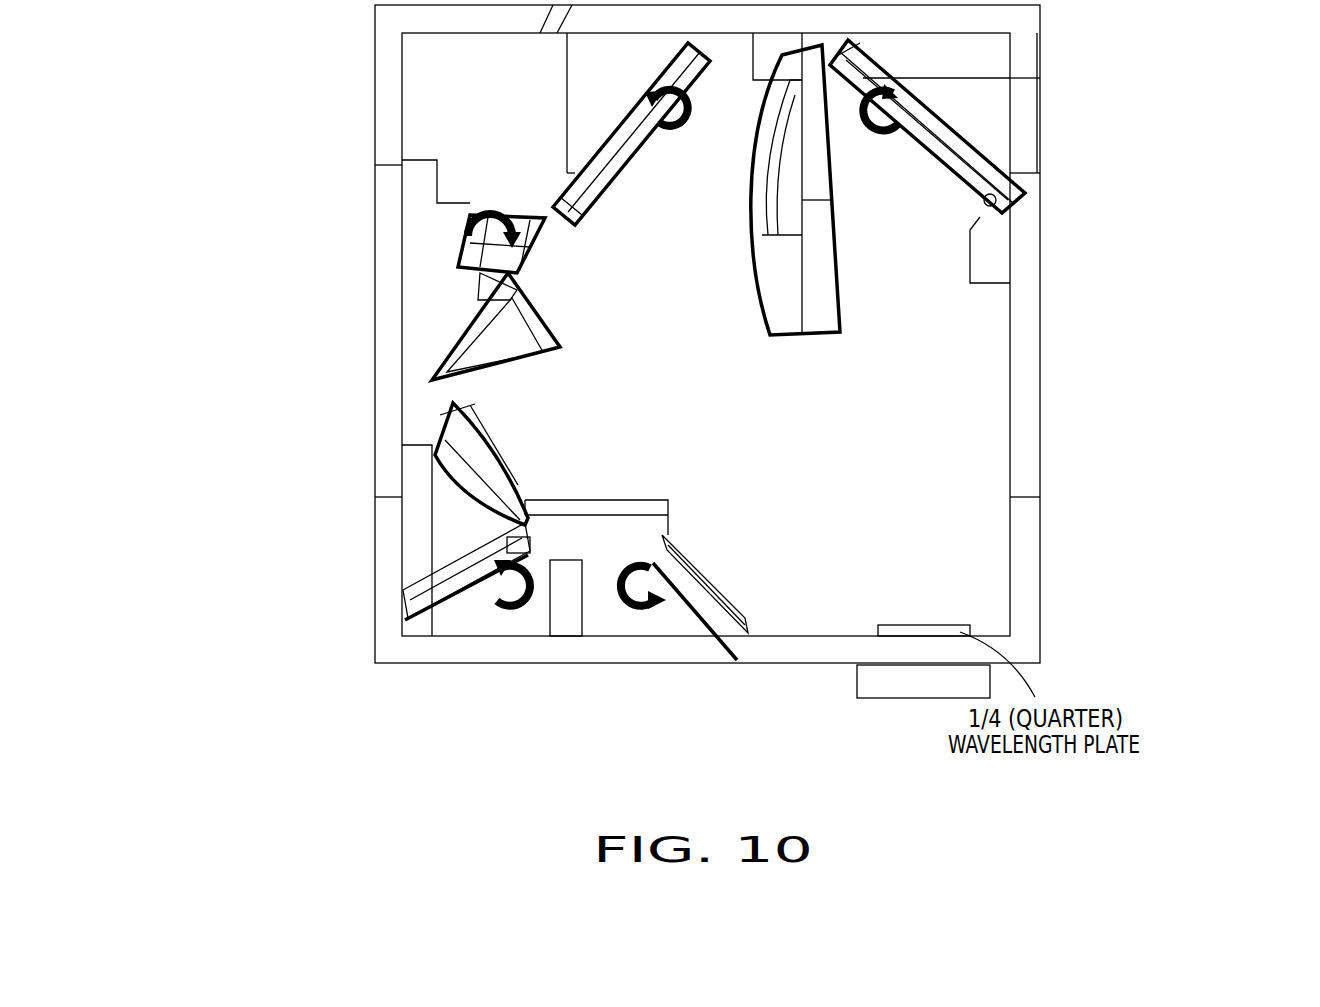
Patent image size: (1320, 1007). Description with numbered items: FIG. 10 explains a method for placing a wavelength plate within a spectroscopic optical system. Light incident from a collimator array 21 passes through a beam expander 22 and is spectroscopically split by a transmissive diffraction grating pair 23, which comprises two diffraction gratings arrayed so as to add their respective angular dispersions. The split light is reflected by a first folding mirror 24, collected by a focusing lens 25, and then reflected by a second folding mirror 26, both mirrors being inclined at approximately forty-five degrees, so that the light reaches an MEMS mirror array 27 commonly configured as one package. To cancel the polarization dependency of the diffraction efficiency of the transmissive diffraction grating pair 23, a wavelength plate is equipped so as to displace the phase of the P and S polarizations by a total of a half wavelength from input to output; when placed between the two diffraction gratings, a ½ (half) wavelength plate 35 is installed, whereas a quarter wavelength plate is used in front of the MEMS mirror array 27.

The collimator array 21 is at (462, 277).
The beam expander 22 is at (360, 277).
The transmissive diffraction grating pair 23 is at (360, 658).
The first folding mirror 24 is at (551, 134).
The focusing lens 25 is at (806, 219).
The second folding mirror 26 is at (1069, 126).
The MEMS mirror array 27 is at (888, 700).
The ½ (half) wavelength plate 35 is at (565, 636).